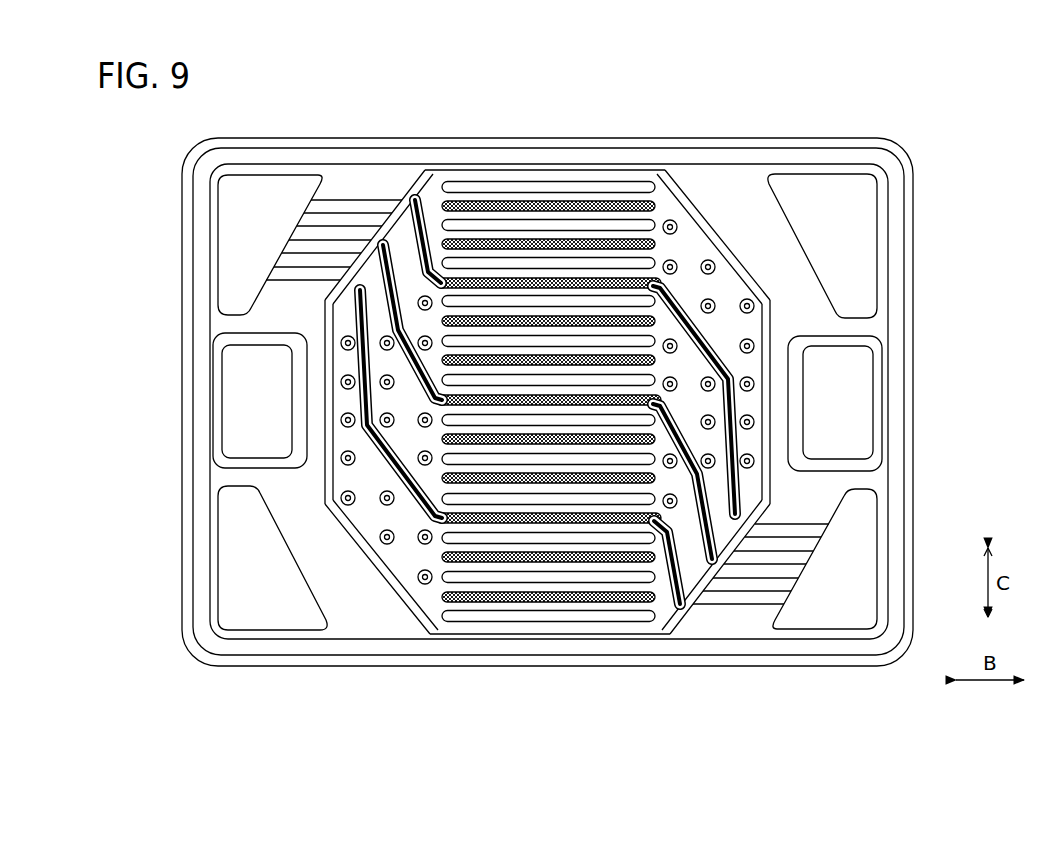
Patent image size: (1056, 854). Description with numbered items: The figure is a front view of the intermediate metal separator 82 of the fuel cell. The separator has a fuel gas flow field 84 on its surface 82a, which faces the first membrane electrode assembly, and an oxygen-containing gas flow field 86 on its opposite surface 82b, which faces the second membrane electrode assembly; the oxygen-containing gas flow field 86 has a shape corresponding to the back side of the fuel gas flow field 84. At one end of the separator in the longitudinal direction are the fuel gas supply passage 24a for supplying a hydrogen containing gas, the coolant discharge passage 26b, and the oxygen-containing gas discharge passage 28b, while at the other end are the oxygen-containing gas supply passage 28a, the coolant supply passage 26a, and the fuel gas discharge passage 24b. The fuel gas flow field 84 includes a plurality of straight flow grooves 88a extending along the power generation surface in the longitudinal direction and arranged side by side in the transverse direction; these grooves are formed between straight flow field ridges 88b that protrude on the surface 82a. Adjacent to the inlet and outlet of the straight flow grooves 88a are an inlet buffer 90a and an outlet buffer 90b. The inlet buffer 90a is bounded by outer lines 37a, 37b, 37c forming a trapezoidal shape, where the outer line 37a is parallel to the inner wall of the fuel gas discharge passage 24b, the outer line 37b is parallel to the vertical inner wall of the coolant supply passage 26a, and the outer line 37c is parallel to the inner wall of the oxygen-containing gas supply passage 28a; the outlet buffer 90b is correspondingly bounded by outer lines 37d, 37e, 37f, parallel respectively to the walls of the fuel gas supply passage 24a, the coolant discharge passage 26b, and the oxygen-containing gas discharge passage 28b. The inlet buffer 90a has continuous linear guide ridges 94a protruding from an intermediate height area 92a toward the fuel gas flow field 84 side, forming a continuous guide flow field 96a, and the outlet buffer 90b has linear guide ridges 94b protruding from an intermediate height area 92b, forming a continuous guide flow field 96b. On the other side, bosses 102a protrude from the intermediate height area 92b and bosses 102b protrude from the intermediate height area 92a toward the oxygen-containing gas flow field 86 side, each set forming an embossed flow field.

The intermediate metal separator 82 is at (160, 132).
The surface 82a is at (840, 658).
The surface 82b is at (878, 667).
The fuel gas supply passage 24a is at (270, 245).
The fuel gas discharge passage 24b is at (825, 559).
The oxygen-containing gas supply passage 28a is at (822, 246).
The oxygen-containing gas discharge passage 28b is at (272, 558).
The coolant supply passage 26a is at (853, 398).
The coolant discharge passage 26b is at (248, 397).
The outer line 37a is at (372, 560).
The outer line 37b is at (337, 433).
The outer line 37c is at (377, 247).
The outer line 37d is at (727, 252).
The outer line 37e is at (858, 356).
The outer line 37f is at (728, 540).
The fuel gas flow field 84 is at (553, 186).
The oxygen-containing gas flow field 86 is at (488, 195).
The straight flow grooves 88a is at (578, 613).
The straight flow field ridges 88b is at (498, 603).
The inlet buffer 90a is at (387, 558).
The outlet buffer 90b is at (710, 245).
The intermediate height area 92a is at (418, 593).
The intermediate height area 92b is at (677, 211).
The linear guide ridges 94a is at (417, 520).
The linear guide ridges 94b is at (681, 283).
The continuous guide flow field 96a is at (386, 365).
The continuous guide flow field 96b is at (708, 440).
The bosses 102a is at (738, 512).
The bosses 102b is at (358, 291).